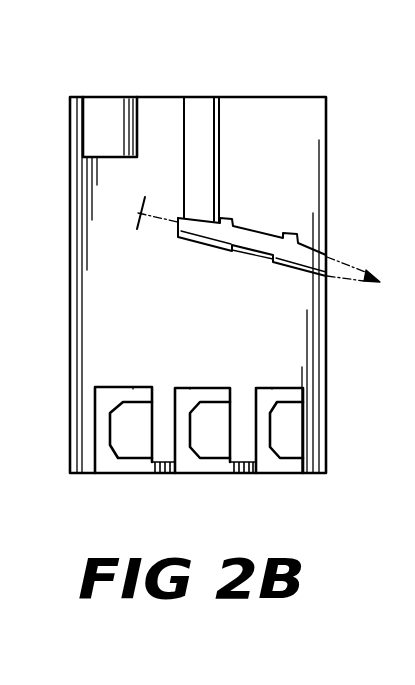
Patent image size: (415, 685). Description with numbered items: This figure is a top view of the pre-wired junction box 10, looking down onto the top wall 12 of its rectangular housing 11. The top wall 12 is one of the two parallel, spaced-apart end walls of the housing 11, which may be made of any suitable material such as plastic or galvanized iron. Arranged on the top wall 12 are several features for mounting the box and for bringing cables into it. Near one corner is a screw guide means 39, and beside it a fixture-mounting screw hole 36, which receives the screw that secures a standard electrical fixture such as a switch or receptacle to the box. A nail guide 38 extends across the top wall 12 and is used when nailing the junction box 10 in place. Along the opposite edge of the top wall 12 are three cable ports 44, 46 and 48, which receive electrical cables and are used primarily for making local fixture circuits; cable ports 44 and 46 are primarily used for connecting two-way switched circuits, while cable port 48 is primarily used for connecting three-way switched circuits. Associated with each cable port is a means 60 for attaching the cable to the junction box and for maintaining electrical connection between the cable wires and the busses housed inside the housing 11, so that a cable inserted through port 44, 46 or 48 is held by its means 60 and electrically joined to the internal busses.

The pre-wired junction box 10 is at (246, 58).
The rectangular housing 11 is at (68, 160).
The top wall 12 is at (204, 326).
The fixture-mounting screw hole 36 is at (198, 98).
The nail guide 38 is at (232, 220).
The screw guide means 39 is at (104, 98).
The cable port 44 is at (287, 437).
The cable port 46 is at (215, 443).
The cable port 48 is at (137, 445).
The means for attaching cables 60 is at (190, 388).